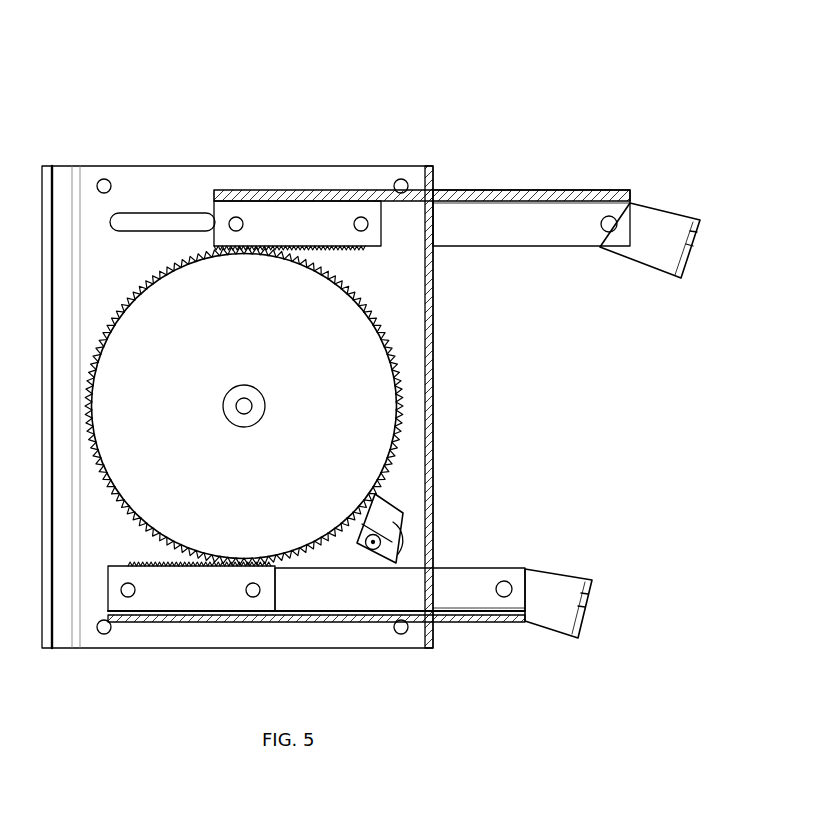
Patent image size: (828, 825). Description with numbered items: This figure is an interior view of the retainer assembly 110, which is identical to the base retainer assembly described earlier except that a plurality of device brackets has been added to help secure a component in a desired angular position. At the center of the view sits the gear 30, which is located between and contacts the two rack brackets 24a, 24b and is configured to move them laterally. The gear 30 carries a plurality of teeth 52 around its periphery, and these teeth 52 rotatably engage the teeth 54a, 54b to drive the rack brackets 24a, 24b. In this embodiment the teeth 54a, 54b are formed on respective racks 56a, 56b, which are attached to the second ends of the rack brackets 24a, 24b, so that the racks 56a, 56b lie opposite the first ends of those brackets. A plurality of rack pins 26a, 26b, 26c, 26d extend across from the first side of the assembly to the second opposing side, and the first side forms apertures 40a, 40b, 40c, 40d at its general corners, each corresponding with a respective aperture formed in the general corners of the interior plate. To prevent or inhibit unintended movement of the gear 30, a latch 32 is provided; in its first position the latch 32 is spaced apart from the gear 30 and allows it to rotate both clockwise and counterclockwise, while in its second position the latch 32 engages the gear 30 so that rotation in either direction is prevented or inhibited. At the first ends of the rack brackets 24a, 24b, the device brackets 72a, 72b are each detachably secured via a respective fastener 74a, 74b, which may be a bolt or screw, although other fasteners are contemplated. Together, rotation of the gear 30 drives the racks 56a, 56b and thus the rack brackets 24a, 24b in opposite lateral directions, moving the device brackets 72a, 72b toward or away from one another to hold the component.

The retainer assembly 110 is at (452, 72).
The gear 30 is at (329, 435).
The teeth 52 is at (398, 346).
The latch 32 is at (393, 506).
The rack bracket 24a is at (486, 555).
The rack bracket 24b is at (544, 262).
The rack pin 26a is at (255, 598).
The rack pin 26b is at (130, 598).
The rack pin 26c is at (362, 217).
The rack pin 26d is at (237, 217).
The aperture 40a is at (106, 634).
The aperture 40b is at (403, 634).
The aperture 40c is at (404, 179).
The aperture 40d is at (104, 179).
The teeth 54a is at (140, 562).
The teeth 54b is at (340, 252).
The rack 56a is at (178, 598).
The rack 56b is at (296, 212).
The device bracket 72a is at (581, 555).
The device bracket 72b is at (640, 280).
The fastener 74a is at (504, 581).
The fastener 74b is at (609, 216).